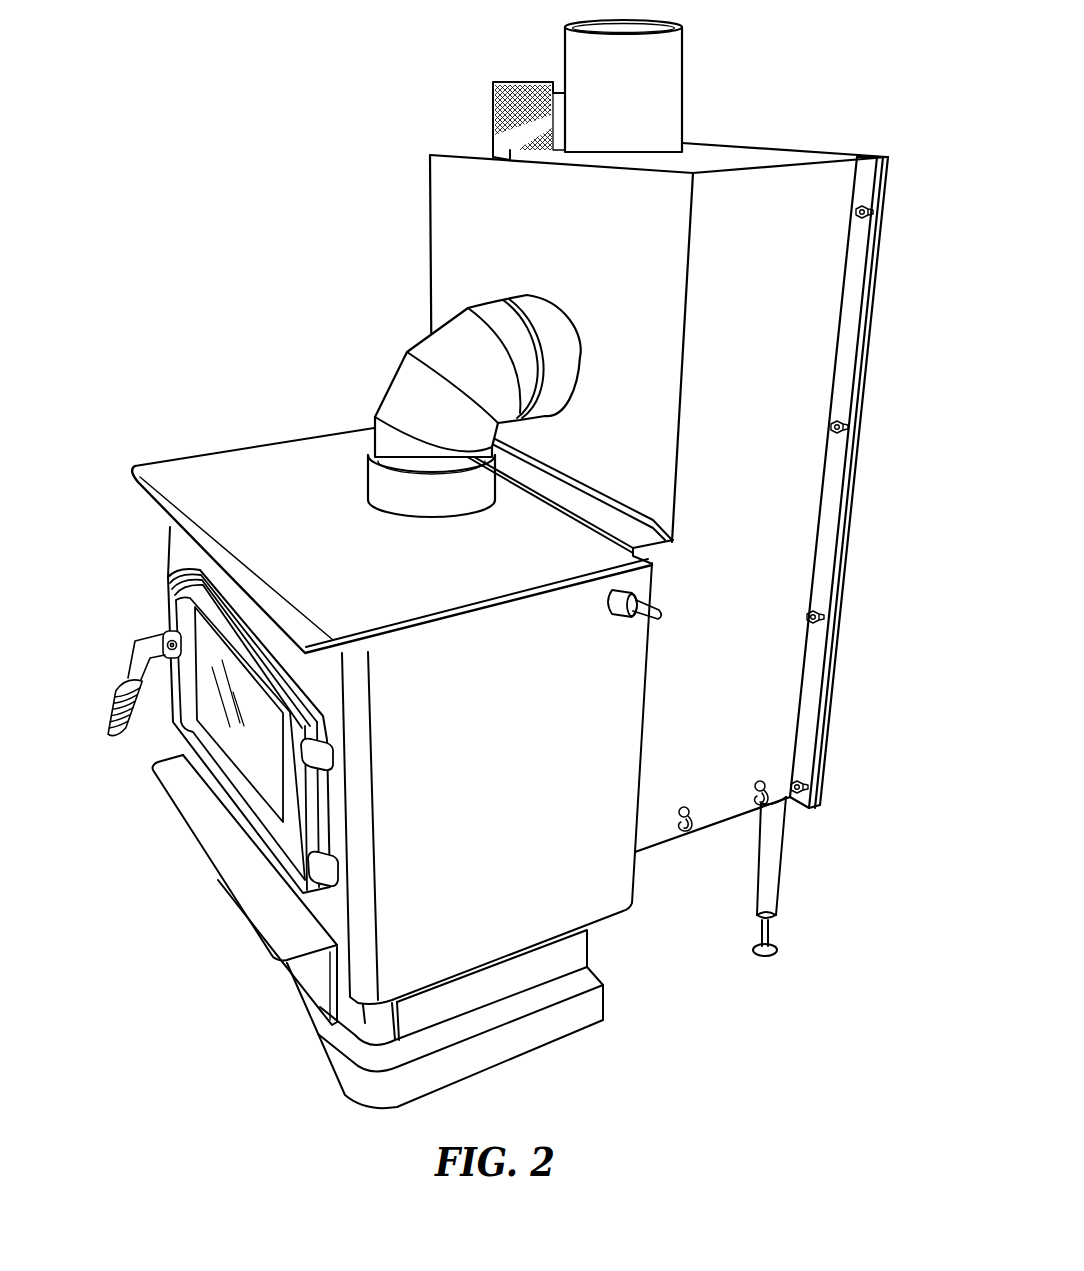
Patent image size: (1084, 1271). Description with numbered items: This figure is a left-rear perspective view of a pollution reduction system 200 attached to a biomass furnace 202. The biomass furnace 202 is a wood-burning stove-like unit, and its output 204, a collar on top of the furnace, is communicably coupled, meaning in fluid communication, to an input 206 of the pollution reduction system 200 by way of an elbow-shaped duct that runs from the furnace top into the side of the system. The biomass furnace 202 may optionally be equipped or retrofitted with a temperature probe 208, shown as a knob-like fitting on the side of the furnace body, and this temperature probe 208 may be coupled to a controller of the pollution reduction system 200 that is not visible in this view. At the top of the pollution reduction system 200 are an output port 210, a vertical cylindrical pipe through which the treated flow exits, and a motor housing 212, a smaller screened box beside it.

The pollution reduction system 200 is at (805, 120).
The biomass furnace 202 is at (175, 470).
The output 204 is at (377, 479).
The input 206 is at (543, 307).
The temperature probe 208 is at (660, 603).
The output port 210 is at (660, 52).
The motor housing 212 is at (494, 100).